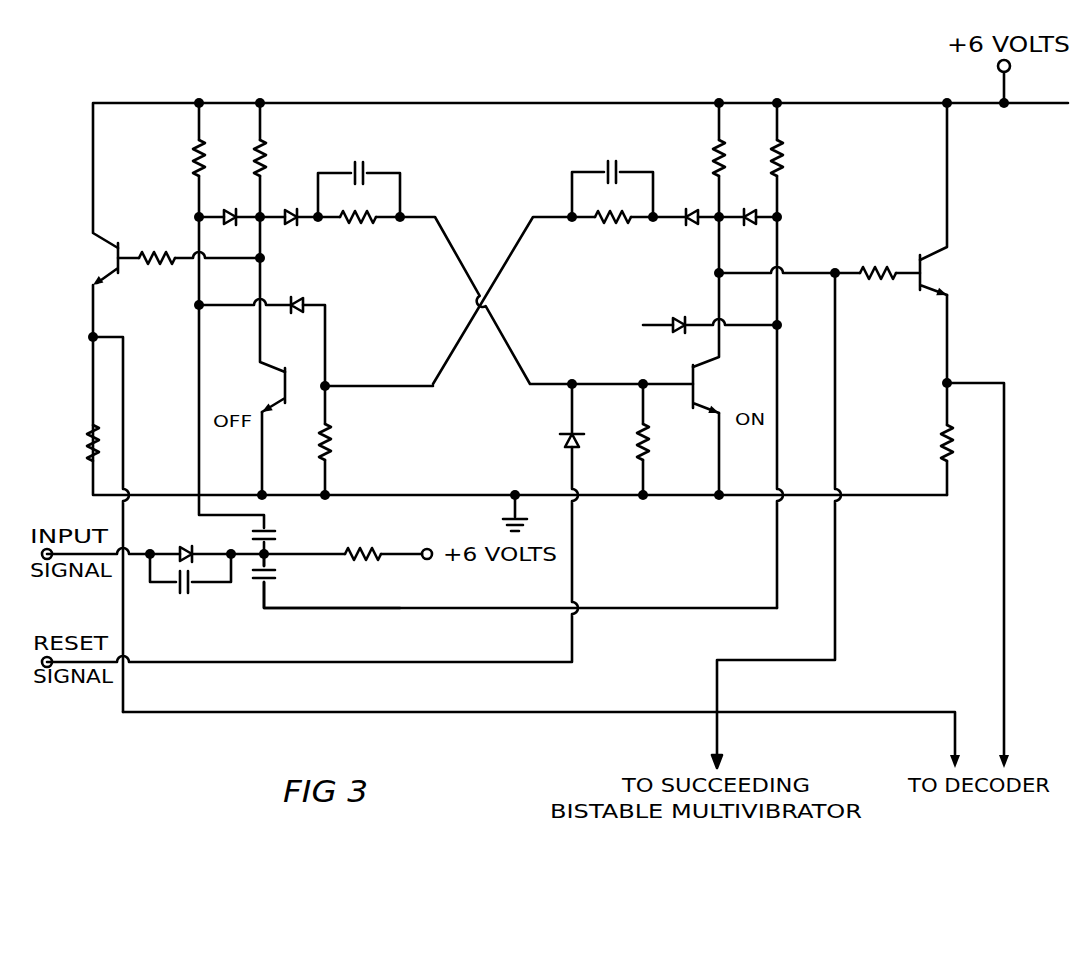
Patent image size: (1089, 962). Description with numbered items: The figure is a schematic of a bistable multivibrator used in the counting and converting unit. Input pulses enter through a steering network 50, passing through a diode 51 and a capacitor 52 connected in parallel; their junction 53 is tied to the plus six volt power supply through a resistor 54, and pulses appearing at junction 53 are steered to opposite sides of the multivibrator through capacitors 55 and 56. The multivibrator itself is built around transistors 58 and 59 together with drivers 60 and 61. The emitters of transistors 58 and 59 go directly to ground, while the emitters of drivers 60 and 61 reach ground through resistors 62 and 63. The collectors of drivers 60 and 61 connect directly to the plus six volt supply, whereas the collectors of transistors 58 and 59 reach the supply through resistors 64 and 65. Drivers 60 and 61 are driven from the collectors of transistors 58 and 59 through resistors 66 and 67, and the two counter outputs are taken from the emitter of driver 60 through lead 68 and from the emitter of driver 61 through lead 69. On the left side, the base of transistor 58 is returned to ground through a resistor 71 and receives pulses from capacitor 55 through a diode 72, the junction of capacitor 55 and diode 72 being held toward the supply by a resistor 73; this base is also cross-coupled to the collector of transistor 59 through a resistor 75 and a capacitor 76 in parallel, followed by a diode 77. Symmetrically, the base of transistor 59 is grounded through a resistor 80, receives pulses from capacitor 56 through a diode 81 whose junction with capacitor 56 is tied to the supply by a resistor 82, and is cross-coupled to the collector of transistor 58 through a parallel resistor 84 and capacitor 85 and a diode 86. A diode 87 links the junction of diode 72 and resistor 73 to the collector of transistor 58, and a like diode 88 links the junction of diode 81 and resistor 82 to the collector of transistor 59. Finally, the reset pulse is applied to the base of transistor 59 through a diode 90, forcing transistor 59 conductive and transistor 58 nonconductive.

The steering network 50 is at (272, 623).
The diode 51 is at (193, 545).
The capacitor 52 is at (195, 595).
The junction 53 is at (273, 558).
The resistor 54 is at (367, 543).
The capacitor 55 is at (277, 538).
The capacitor 56 is at (260, 587).
The transistor 58 is at (268, 387).
The transistor 59 is at (710, 388).
The driver 60 is at (100, 260).
The driver 61 is at (942, 267).
The resistor 62 is at (83, 443).
The resistor 63 is at (937, 437).
The resistor 64 is at (250, 158).
The resistor 65 is at (728, 160).
The resistor 66 is at (151, 277).
The resistor 67 is at (883, 278).
The lead 68 is at (272, 720).
The lead 69 is at (993, 600).
The resistor 71 is at (317, 445).
The diode 72 is at (300, 318).
The resistor 73 is at (190, 175).
The resistor 75 is at (627, 230).
The capacitor 76 is at (630, 168).
The diode 77 is at (680, 207).
The resistor 80 is at (633, 435).
The diode 81 is at (690, 332).
The resistor 82 is at (787, 168).
The resistor 84 is at (350, 227).
The capacitor 85 is at (360, 155).
The diode 86 is at (302, 207).
The diode 87 is at (247, 193).
The diode 88 is at (763, 193).
The diode 90 is at (560, 447).